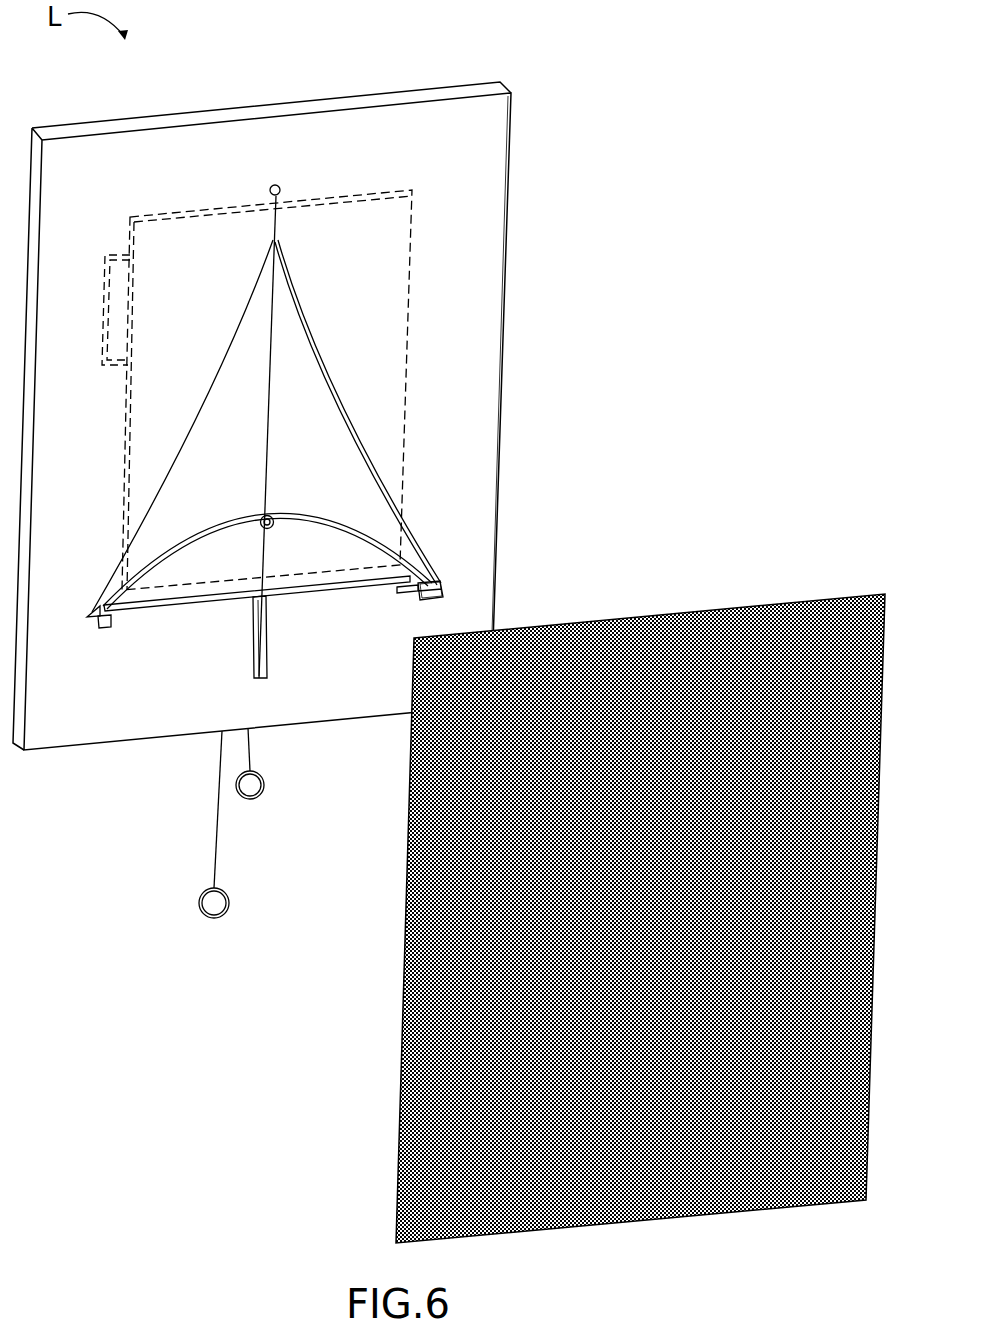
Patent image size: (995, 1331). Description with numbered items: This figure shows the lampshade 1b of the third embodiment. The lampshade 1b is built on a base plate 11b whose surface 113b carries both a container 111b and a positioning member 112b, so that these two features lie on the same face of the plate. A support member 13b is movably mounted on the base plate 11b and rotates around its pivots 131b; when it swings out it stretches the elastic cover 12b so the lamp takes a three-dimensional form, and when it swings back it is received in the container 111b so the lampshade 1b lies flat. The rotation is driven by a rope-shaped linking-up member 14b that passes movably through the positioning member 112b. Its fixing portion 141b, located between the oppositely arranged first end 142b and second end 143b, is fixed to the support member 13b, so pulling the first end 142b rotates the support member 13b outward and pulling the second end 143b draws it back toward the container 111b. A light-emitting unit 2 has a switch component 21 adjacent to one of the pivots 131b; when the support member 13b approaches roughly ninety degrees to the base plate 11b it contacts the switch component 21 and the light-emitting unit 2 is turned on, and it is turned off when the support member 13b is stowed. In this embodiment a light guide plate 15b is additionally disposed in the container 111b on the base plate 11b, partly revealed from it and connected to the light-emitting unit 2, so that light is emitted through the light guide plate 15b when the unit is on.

The lampshade 1b is at (605, 397).
The base plate 11b is at (500, 504).
The container 111b is at (300, 312).
The positioning member 112b is at (282, 190).
The surface 113b is at (477, 140).
The elastic cover 12b is at (525, 633).
The support member 13b is at (357, 522).
The pivots 131b is at (118, 620).
The linking-up member 14b is at (276, 416).
The fixing portion 141b is at (271, 530).
The first end 142b is at (264, 785).
The second end 143b is at (229, 898).
The light guide plate 15b is at (167, 233).
The light-emitting unit 2 is at (118, 292).
The switch component 21 is at (443, 594).